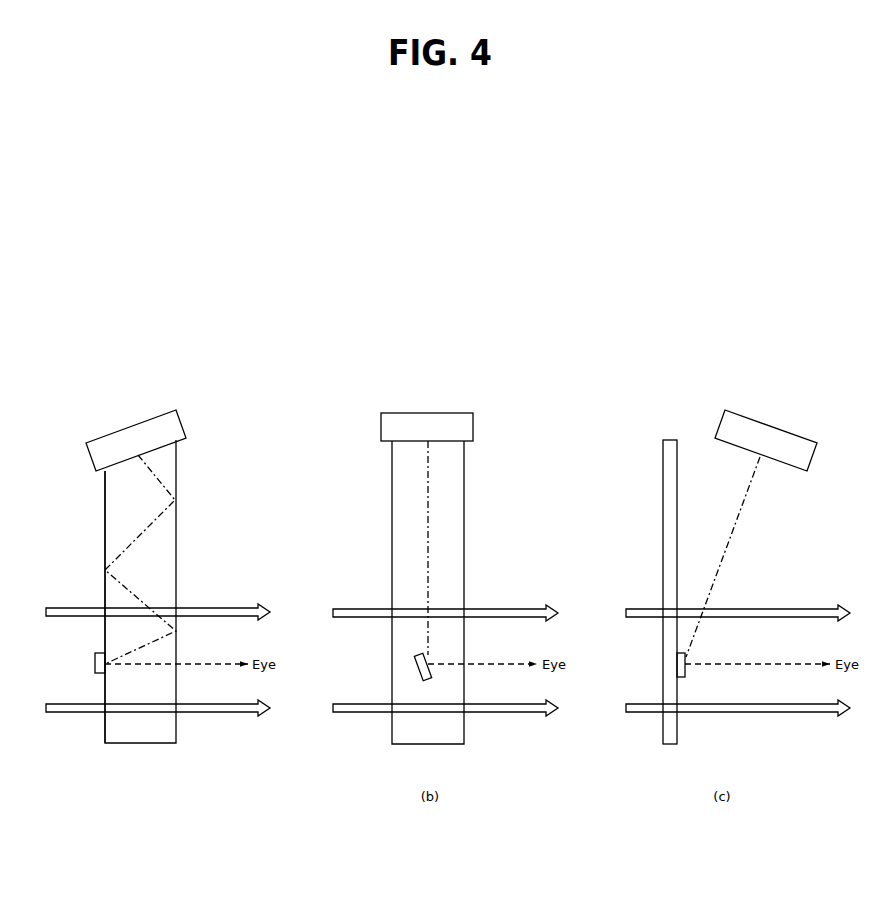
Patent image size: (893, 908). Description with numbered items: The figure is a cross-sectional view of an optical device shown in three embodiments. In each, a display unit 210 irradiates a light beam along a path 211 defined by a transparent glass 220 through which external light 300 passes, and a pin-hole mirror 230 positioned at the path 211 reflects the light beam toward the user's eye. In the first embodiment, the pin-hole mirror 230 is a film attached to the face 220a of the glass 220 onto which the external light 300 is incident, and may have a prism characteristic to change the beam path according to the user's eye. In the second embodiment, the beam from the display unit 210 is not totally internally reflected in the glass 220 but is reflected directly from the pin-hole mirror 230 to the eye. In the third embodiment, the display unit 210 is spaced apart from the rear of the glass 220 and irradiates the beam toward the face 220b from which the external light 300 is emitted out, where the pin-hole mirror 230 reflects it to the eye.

The display unit 210 is at (133, 422).
The path of the light beam 211 is at (163, 478).
The glass 220 is at (163, 563).
The face of the glass onto which external light is incident 220a is at (103, 513).
The face of the glass from which external light is emitted out 220b is at (681, 457).
The pin-hole mirror 230 is at (98, 678).
The external light 300 is at (218, 603).